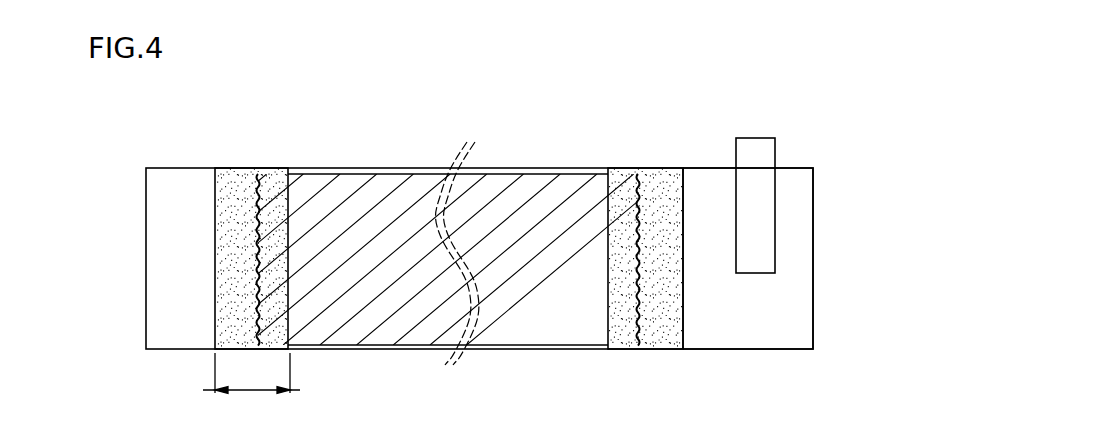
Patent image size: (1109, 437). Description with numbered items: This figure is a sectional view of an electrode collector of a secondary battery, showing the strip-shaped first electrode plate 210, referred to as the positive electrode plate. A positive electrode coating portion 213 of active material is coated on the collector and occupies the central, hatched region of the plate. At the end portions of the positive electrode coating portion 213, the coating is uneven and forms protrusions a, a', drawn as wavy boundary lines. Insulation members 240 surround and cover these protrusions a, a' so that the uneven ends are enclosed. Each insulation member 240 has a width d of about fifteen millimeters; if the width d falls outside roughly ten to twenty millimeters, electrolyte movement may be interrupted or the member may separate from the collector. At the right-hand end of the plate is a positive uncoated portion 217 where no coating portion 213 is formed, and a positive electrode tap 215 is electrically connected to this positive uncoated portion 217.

The first electrode plate 210 is at (815, 108).
The positive electrode coating portion 213 is at (347, 190).
The positive electrode tap 215 is at (757, 142).
The positive uncoated portion 217 is at (803, 217).
The insulation member 240 is at (238, 172).
The protrusion a is at (646, 211).
The protrusion a' is at (266, 207).
The width of insulation member d is at (251, 373).